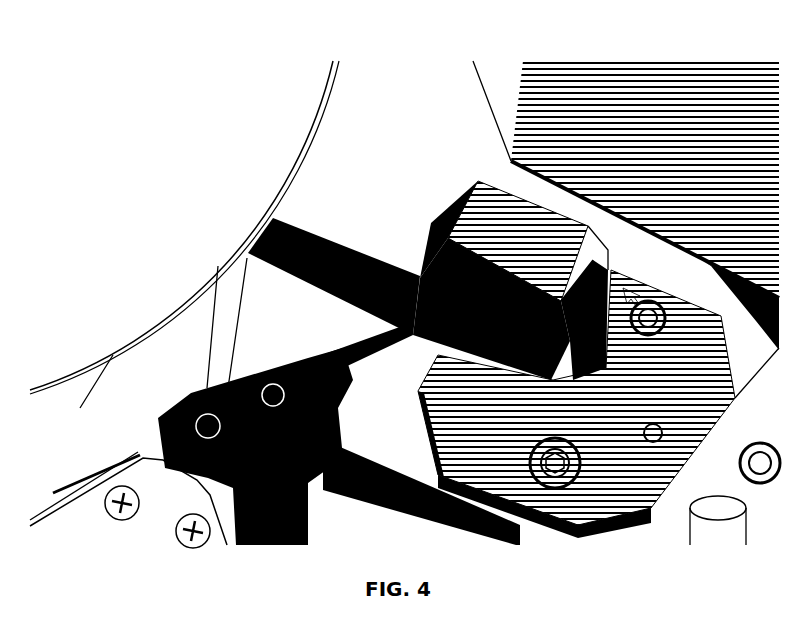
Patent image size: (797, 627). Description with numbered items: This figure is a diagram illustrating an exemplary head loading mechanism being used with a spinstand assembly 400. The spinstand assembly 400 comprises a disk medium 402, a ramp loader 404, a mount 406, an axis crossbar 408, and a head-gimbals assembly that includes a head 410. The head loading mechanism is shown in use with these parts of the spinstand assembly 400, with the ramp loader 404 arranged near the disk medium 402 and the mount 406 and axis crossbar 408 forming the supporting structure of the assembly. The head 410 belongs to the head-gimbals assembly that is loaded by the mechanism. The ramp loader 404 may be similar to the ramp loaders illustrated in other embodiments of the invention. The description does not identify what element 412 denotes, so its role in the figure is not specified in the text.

The spinstand assembly 400 is at (428, 21).
The disk medium 402 is at (298, 144).
The ramp loader 404 is at (470, 345).
The mount 406 is at (565, 205).
The axis crossbar 408 is at (732, 328).
The head 410 is at (400, 320).
The clamp mechanism 412 is at (352, 362).